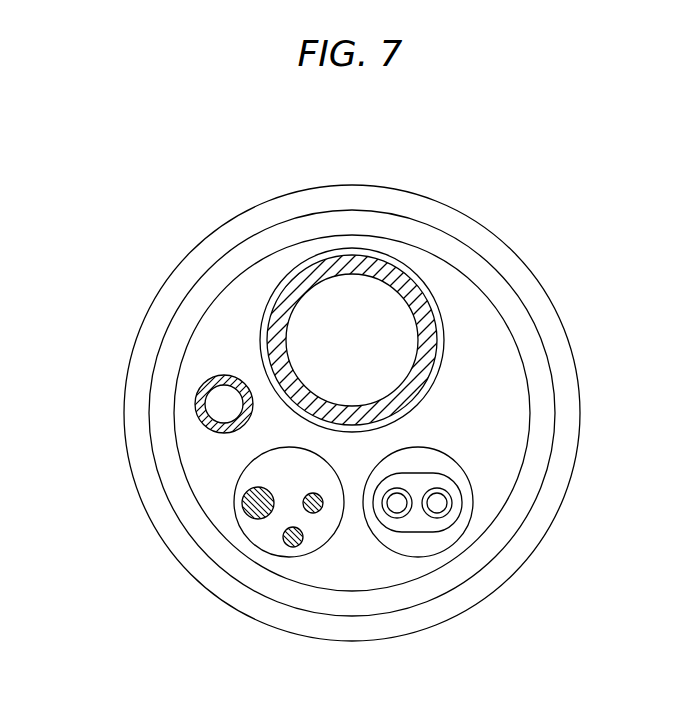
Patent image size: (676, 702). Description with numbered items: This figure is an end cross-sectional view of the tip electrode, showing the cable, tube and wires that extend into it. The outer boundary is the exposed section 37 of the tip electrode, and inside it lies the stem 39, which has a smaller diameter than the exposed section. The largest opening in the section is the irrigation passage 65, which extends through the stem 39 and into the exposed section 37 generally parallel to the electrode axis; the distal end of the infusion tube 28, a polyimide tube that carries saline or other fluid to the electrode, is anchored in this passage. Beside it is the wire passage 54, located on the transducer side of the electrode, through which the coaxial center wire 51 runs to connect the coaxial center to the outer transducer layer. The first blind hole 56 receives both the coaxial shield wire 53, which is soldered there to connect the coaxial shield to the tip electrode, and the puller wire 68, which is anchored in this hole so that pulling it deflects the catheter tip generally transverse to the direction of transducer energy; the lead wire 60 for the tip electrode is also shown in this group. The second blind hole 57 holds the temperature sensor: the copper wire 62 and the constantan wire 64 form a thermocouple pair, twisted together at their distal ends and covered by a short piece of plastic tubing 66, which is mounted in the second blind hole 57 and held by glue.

The exposed section 37 is at (550, 295).
The stem 39 is at (235, 248).
The infusion tube 28 is at (373, 270).
The irrigation passage 65 is at (417, 275).
The coaxial center wire 51 is at (217, 375).
The wire passage 54 is at (232, 400).
The first blind hole 56 is at (242, 532).
The puller wire 68 is at (243, 501).
The lead wire 60 is at (317, 512).
The coaxial shield wire 53 is at (291, 547).
The second blind hole 57 is at (417, 483).
The plastic tubing 66 is at (455, 474).
The copper wire 62 is at (397, 503).
The constantan wire 64 is at (437, 503).